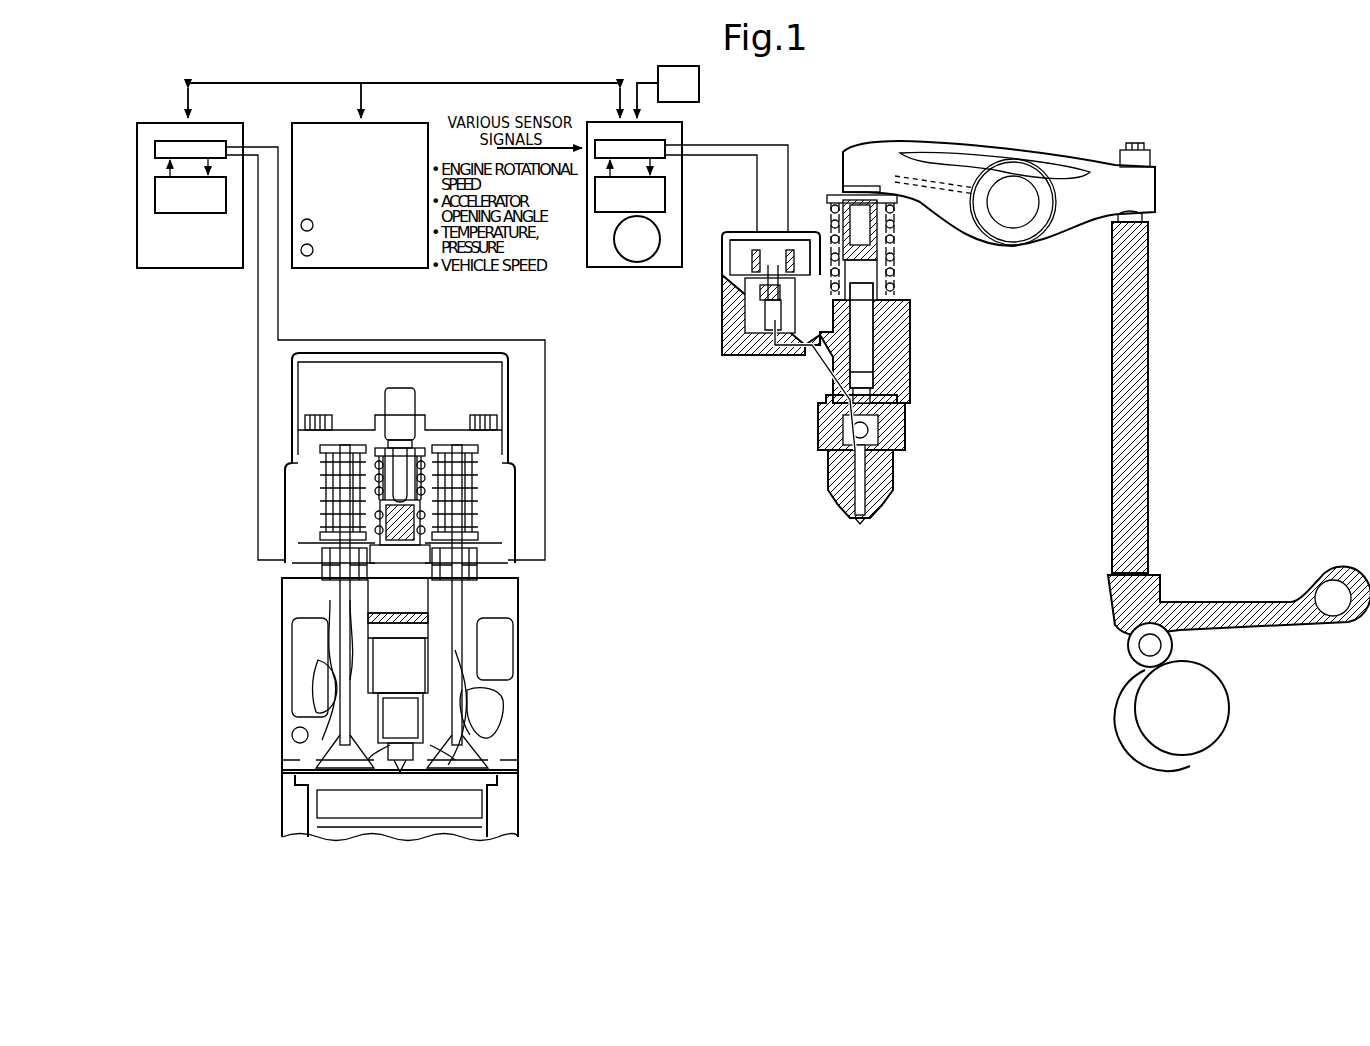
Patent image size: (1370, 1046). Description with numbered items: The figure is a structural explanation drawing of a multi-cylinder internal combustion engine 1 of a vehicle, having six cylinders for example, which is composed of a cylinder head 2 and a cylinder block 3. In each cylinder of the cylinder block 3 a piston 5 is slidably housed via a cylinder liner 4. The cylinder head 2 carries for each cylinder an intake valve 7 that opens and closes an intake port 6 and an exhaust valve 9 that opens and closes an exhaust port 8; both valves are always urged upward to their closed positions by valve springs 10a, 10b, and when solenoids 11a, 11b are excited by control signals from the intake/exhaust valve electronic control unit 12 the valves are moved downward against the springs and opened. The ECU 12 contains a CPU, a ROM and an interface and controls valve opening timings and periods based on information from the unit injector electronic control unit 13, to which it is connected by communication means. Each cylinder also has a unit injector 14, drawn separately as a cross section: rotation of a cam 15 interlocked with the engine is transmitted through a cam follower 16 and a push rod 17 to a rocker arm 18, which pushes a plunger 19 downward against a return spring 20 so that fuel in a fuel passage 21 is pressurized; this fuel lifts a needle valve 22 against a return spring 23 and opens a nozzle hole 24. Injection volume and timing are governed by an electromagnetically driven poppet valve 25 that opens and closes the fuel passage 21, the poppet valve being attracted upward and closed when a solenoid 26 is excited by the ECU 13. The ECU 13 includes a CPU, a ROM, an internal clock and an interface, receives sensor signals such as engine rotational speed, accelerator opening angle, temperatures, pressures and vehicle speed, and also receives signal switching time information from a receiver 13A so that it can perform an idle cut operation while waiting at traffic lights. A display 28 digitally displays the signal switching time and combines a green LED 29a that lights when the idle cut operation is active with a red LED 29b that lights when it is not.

The multi-cylinder internal combustion engine 1 is at (532, 660).
The cylinder head 2 is at (283, 668).
The cylinder block 3 is at (284, 806).
The cylinder liner 4 is at (495, 800).
The piston 5 is at (450, 822).
The intake port 6 is at (318, 700).
The intake valve 7 is at (290, 740).
The exhaust port 8 is at (495, 707).
The exhaust valve 9 is at (470, 735).
The valve spring 10a is at (320, 490).
The valve spring 10b is at (480, 490).
The solenoid 11a is at (322, 560).
The solenoid 11b is at (477, 560).
The intake/exhaust valve electronic control unit 12 is at (157, 268).
The unit injector electronic control unit 13 is at (632, 267).
The receiver 13A is at (699, 80).
The unit injector 14 is at (366, 625).
The cam 15 is at (1135, 735).
The cam follower 16 is at (1168, 650).
The push rod 17 is at (1125, 418).
The rocker arm 18 is at (400, 393).
The plunger 19 is at (866, 306).
The return spring 20 is at (425, 470).
The fuel passage 21 is at (802, 352).
The needle valve 22 is at (866, 497).
The return spring 23 is at (880, 441).
The nozzle hole 24 is at (858, 521).
The electromagnetically driven poppet valve 25 is at (724, 340).
The solenoid 26 is at (742, 266).
The display 28 is at (378, 128).
The green LED 29a is at (313, 227).
The red LED 29b is at (306, 256).